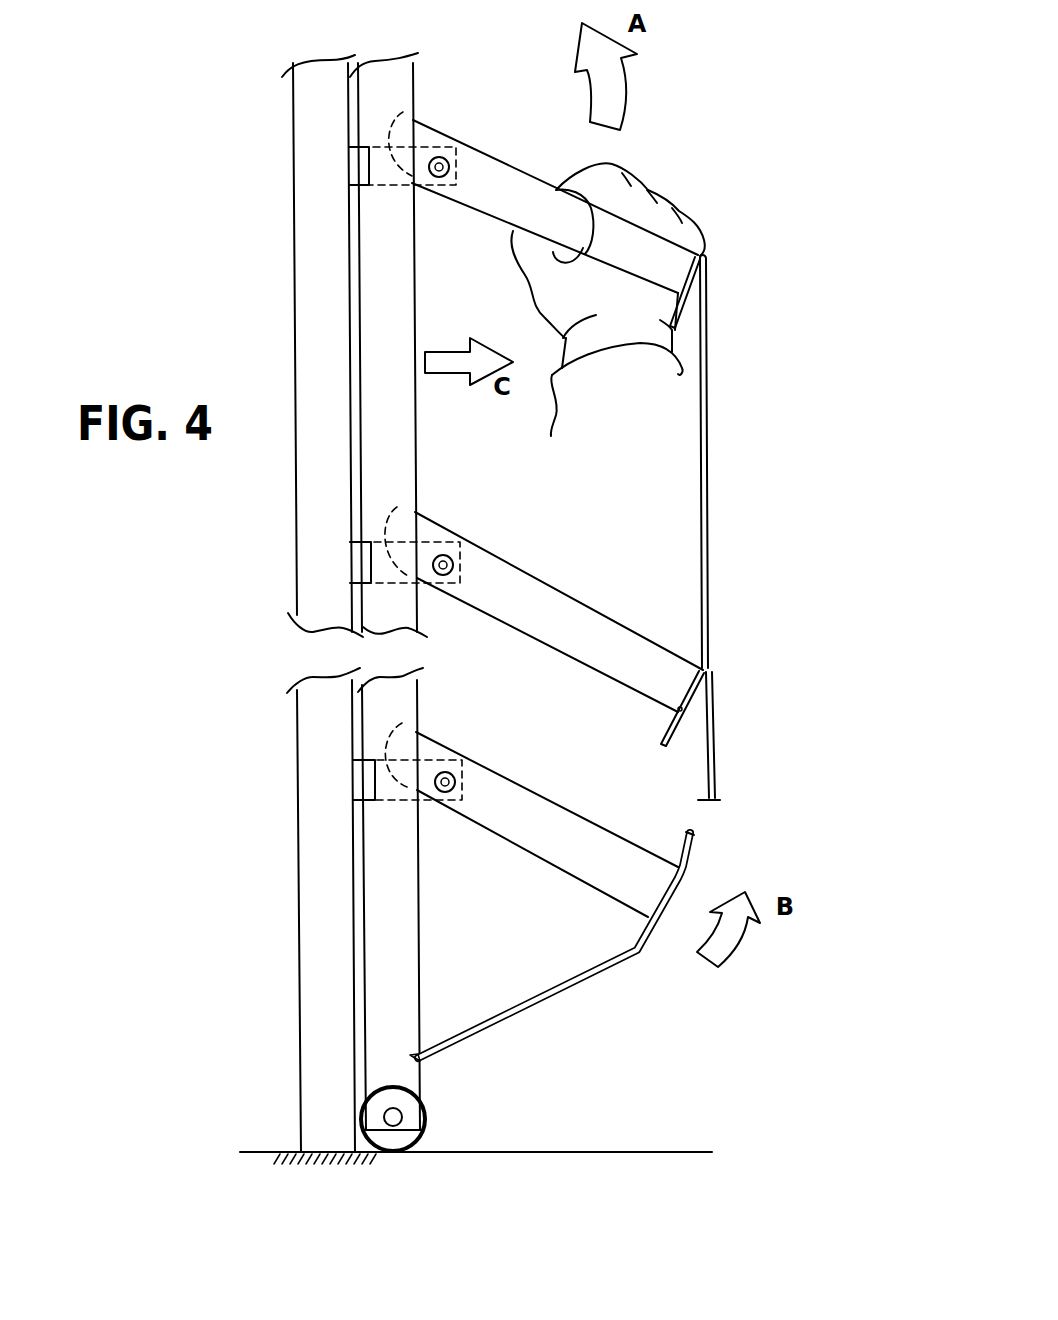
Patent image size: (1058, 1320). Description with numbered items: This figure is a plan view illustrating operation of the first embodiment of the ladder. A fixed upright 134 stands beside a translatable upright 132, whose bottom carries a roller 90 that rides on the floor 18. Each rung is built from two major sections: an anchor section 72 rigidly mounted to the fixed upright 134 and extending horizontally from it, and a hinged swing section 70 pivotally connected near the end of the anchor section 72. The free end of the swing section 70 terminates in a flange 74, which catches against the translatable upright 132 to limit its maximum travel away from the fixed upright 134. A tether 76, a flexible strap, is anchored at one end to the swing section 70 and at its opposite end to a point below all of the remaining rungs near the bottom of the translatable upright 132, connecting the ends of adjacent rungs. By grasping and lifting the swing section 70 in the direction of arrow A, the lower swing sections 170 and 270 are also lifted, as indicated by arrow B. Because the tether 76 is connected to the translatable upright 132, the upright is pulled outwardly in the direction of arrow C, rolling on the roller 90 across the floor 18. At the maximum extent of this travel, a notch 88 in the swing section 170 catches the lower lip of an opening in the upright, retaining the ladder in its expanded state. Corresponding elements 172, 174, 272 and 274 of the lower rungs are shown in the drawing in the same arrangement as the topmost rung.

The floor 18 is at (675, 1152).
The swing section 70 is at (510, 167).
The anchor section 72 is at (413, 184).
The flange 74 is at (682, 317).
The tether 76 is at (707, 420).
The notch 88 is at (678, 712).
The roller 90 is at (427, 1133).
The translatable upright 132 is at (420, 967).
The fixed upright 134 is at (300, 998).
The swing section 170 is at (570, 657).
The pivot pin of middle rung 172 is at (418, 580).
The hooked end of link rod 174 is at (665, 747).
The swing section 270 is at (583, 870).
The pivot pin of lower rung 272 is at (418, 792).
The lower link rod 274 is at (633, 950).